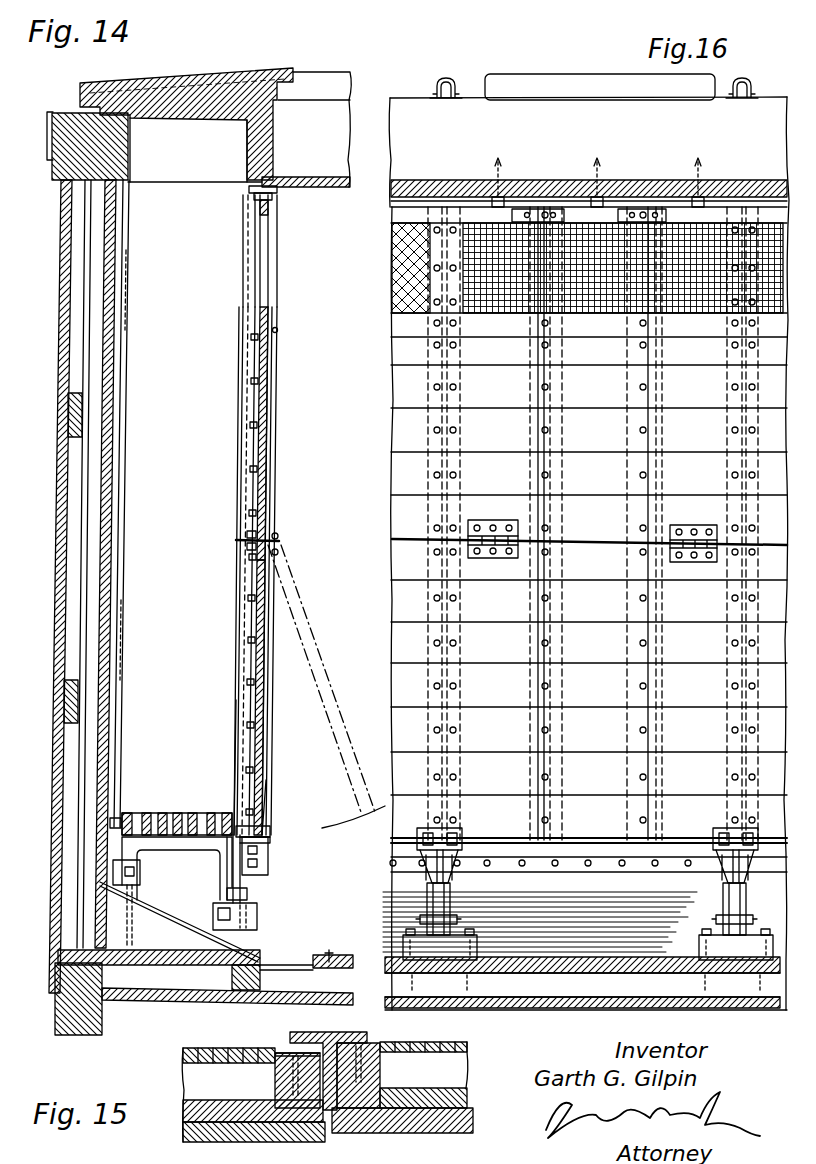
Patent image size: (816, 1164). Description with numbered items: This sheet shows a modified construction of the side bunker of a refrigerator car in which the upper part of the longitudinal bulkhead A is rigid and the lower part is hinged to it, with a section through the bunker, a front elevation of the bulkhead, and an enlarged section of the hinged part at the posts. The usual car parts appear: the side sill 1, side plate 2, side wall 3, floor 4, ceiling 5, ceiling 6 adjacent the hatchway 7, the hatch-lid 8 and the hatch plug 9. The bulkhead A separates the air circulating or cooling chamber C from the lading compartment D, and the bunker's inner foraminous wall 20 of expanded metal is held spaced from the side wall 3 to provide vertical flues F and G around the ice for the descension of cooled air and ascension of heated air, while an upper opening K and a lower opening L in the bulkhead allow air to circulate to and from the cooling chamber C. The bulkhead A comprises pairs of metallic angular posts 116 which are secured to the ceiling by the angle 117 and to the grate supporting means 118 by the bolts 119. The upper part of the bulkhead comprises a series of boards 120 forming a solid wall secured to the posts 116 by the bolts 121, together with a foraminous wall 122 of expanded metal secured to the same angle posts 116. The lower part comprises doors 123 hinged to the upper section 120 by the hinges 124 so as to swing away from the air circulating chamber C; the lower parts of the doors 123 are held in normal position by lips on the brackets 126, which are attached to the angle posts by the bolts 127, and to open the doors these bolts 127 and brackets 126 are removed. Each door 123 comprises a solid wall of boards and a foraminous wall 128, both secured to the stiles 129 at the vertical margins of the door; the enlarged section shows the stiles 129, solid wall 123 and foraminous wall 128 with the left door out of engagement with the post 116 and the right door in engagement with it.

In FIG. 14, the side sill 1 is at (57, 1018).
In FIG. 14, the side plate 2 is at (78, 164).
In FIG. 14, the side wall 3 is at (90, 585).
In FIG. 14, the floor 4 is at (350, 955).
In FIG. 16, the floor 4 is at (680, 955).
In FIG. 14, the ceiling 5 is at (340, 100).
In FIG. 16, the ceiling 5 is at (589, 542).
In FIG. 14, the ceiling 6 is at (358, 173).
In FIG. 14, the hatchway 7 is at (182, 176).
In FIG. 14, the hatch-lid 8 is at (176, 78).
In FIG. 14, the hatch plug 9 is at (183, 118).
In FIG. 14, the foraminous wall 20 is at (122, 772).
In FIG. 14, the angular post 116 is at (248, 396).
In FIG. 15, the angular post 116 is at (337, 1034).
In FIG. 16, the angular post 116 is at (452, 881).
In FIG. 14, the angle 117 is at (277, 191).
In FIG. 14, the grate supporting means 118 is at (200, 852).
In FIG. 14, the bolt 119 is at (227, 893).
In FIG. 14, the boards 120 is at (270, 452).
In FIG. 16, the boards 120 is at (404, 478).
In FIG. 14, the bolt 121 is at (273, 385).
In FIG. 14, the foraminous wall 122 is at (242, 445).
In FIG. 14, the door 123 is at (268, 778).
In FIG. 15, the door 123 is at (472, 1098).
In FIG. 16, the door 123 is at (395, 723).
In FIG. 14, the hinge 124 is at (279, 538).
In FIG. 16, the hinge 124 is at (514, 492).
In FIG. 14, the bracket 126 is at (268, 827).
In FIG. 16, the bracket 126 is at (458, 833).
In FIG. 14, the bolt 127 is at (268, 863).
In FIG. 14, the foraminous wall 128 is at (238, 711).
In FIG. 15, the foraminous wall 128 is at (467, 1044).
In FIG. 15, the stile 129 is at (380, 1078).
In FIG. 14, the upper opening K is at (230, 293).
In FIG. 14, the vertical flue F is at (118, 537).
In FIG. 14, the vertical flue G is at (248, 507).
In FIG. 14, the air circulating chamber C is at (187, 671).
In FIG. 14, the lading compartment D is at (326, 686).
In FIG. 14, the longitudinal bulkhead A is at (265, 732).
In FIG. 14, the lower opening L is at (233, 879).